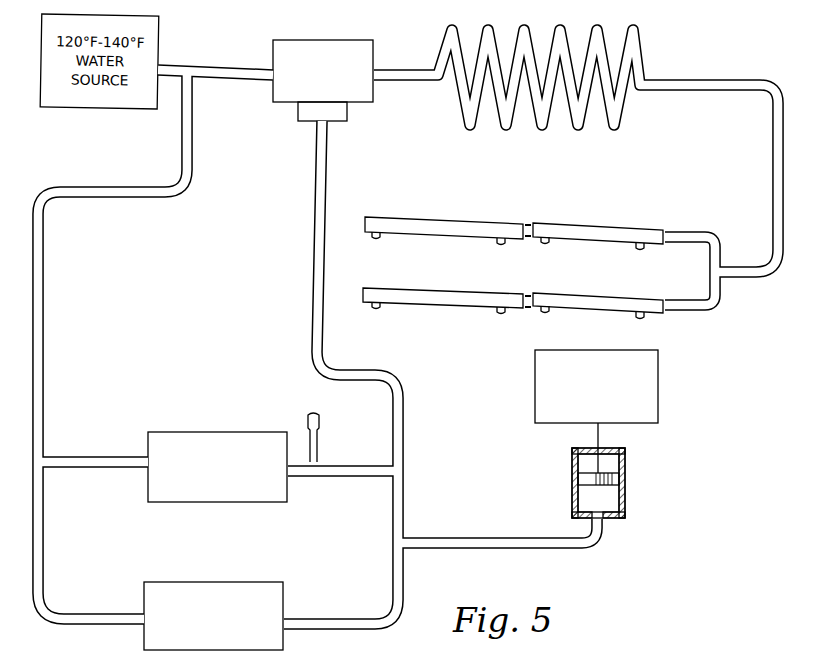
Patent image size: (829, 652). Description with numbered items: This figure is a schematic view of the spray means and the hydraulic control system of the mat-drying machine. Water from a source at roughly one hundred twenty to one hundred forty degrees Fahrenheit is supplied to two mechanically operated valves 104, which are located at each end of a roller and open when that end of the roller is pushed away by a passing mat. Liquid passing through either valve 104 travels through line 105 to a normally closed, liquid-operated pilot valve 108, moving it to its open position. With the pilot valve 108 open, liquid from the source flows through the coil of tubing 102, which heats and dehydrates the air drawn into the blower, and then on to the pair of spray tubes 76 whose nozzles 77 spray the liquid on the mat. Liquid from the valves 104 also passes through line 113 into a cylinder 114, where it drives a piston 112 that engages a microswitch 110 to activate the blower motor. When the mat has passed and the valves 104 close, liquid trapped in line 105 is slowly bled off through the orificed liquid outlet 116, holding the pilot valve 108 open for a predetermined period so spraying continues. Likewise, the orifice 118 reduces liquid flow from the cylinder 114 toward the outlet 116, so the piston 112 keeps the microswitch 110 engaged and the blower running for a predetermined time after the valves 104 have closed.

The spray tubes 76 is at (461, 230).
The nozzles 77 is at (545, 243).
The coil of tubing 102 is at (614, 125).
The valves 104 is at (193, 430).
The line 105 is at (318, 176).
The pilot valve 108 is at (372, 100).
The microswitch 110 is at (656, 360).
The piston 112 is at (626, 478).
The line 113 is at (588, 551).
The cylinder 114 is at (622, 514).
The orificed liquid outlet 116 is at (320, 432).
The orifice 118 is at (485, 548).